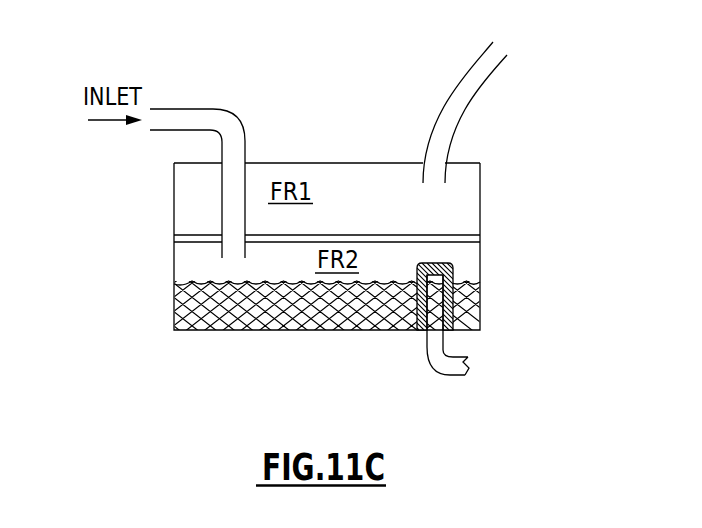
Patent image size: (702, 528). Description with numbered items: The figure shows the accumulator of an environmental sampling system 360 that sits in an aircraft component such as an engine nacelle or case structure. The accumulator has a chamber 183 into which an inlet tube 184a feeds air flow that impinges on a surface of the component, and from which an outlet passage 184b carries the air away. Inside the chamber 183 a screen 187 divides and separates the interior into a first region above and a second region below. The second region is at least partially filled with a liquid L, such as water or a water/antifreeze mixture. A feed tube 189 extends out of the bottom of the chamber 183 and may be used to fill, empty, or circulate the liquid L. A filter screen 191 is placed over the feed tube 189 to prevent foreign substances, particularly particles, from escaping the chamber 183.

The environmental sampling system 360 is at (366, 90).
The inlet tube 184a is at (183, 109).
The outlet passage 184b is at (495, 72).
The chamber 183 is at (480, 213).
The screen 187 is at (308, 236).
The filter screen 191 is at (453, 264).
The feed tube 189 is at (437, 363).
The liquid L is at (224, 314).